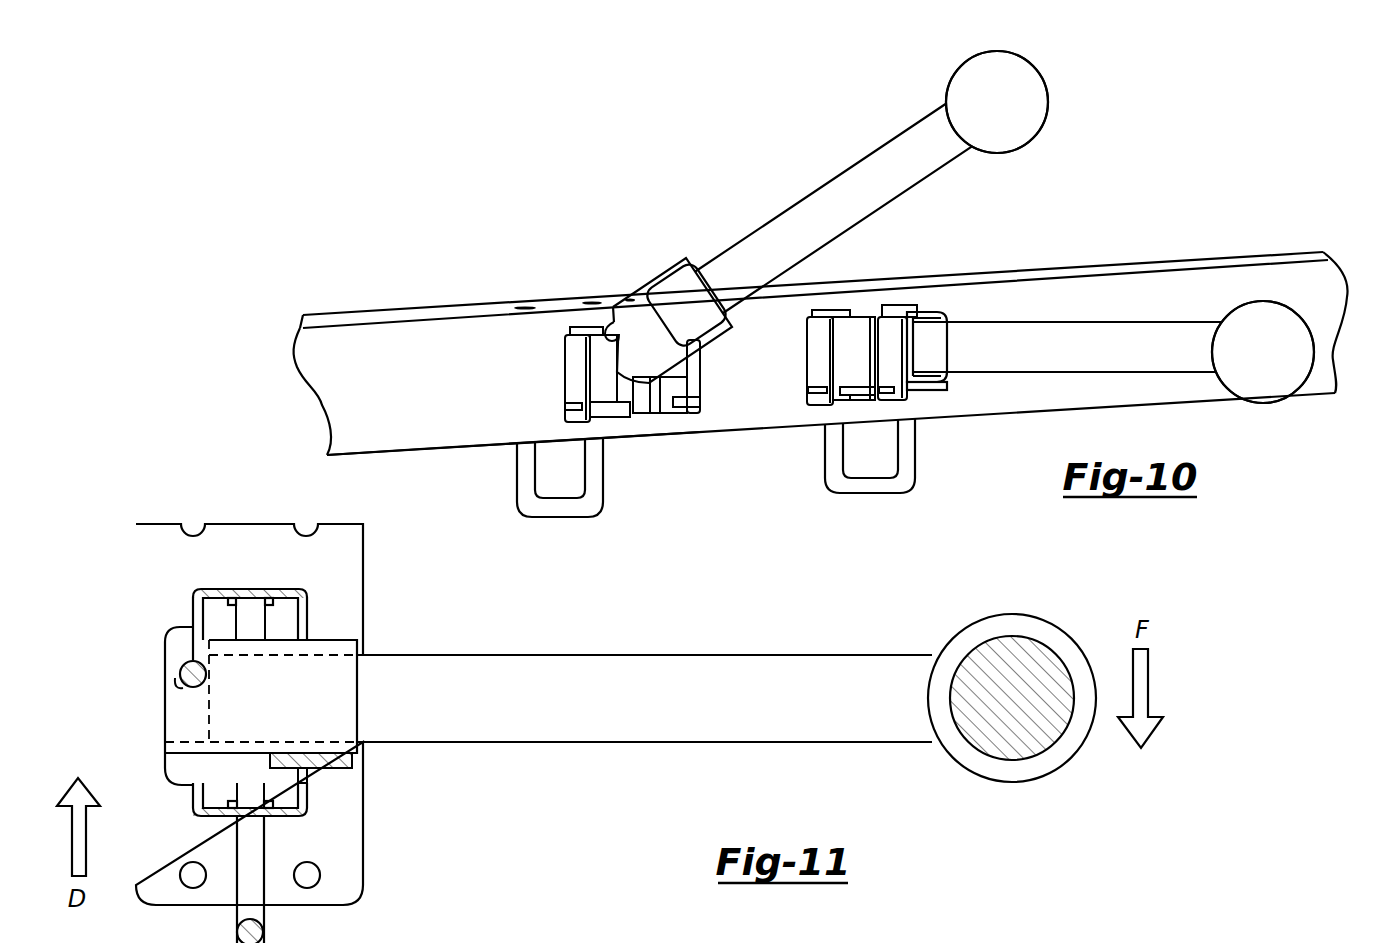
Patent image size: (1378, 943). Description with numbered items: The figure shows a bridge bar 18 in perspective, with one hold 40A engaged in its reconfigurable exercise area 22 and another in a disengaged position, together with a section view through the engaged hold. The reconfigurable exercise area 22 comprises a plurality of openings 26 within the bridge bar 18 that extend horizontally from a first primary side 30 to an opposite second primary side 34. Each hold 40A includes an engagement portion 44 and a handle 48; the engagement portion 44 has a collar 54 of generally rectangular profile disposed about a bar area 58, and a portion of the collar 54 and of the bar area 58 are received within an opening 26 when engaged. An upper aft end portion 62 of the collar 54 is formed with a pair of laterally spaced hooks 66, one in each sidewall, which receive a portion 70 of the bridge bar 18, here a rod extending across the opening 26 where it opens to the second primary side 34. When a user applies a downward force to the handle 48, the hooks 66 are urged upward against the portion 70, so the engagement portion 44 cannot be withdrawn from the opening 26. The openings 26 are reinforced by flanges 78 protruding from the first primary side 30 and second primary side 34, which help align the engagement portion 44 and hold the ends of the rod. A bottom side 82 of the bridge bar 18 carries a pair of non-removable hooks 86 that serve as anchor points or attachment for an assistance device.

In FIG. 10, the bridge bar 18 is at (338, 352).
In FIG. 10, the reconfigurable exercise area 22 is at (597, 222).
In FIG. 10, the openings 26 is at (682, 380).
In FIG. 11, the openings 26 is at (335, 752).
In FIG. 10, the first primary side 30 is at (425, 420).
In FIG. 11, the first primary side 30 is at (320, 803).
In FIG. 11, the second primary side 34 is at (187, 793).
In FIG. 10, the hold 40A is at (1028, 110).
In FIG. 11, the hold 40A is at (1030, 613).
In FIG. 10, the engagement portion 44 is at (707, 243).
In FIG. 11, the engagement portion 44 is at (380, 632).
In FIG. 10, the handle 48 is at (948, 65).
In FIG. 11, the handle 48 is at (946, 613).
In FIG. 10, the collar 54 is at (718, 328).
In FIG. 11, the collar 54 is at (312, 697).
In FIG. 10, the bar area 58 is at (688, 270).
In FIG. 11, the bar area 58 is at (205, 708).
In FIG. 10, the upper aft end portion 62 is at (597, 311).
In FIG. 11, the upper aft end portion 62 is at (178, 635).
In FIG. 10, the hooks 66 is at (622, 334).
In FIG. 11, the hooks 66 is at (175, 681).
In FIG. 11, the portion 70 is at (182, 670).
In FIG. 10, the flanges 78 is at (572, 368).
In FIG. 11, the flanges 78 is at (190, 785).
In FIG. 10, the bottom side 82 is at (370, 457).
In FIG. 10, the hooks 86 is at (553, 508).